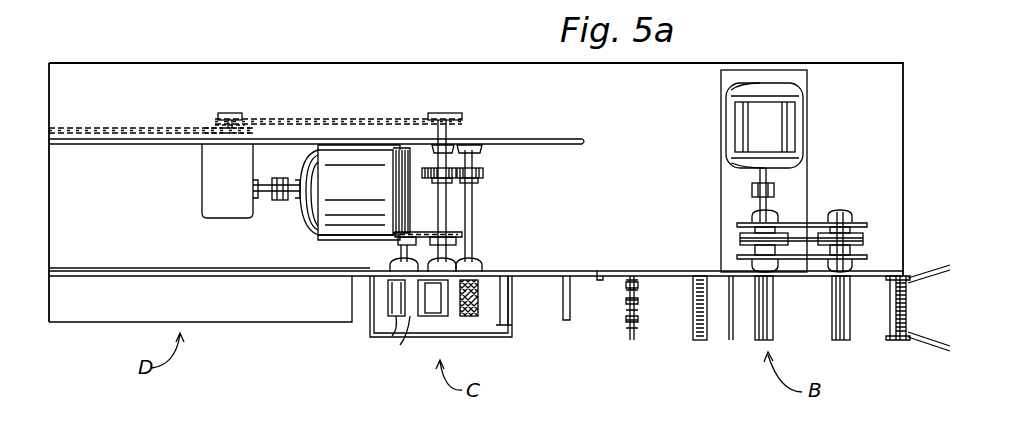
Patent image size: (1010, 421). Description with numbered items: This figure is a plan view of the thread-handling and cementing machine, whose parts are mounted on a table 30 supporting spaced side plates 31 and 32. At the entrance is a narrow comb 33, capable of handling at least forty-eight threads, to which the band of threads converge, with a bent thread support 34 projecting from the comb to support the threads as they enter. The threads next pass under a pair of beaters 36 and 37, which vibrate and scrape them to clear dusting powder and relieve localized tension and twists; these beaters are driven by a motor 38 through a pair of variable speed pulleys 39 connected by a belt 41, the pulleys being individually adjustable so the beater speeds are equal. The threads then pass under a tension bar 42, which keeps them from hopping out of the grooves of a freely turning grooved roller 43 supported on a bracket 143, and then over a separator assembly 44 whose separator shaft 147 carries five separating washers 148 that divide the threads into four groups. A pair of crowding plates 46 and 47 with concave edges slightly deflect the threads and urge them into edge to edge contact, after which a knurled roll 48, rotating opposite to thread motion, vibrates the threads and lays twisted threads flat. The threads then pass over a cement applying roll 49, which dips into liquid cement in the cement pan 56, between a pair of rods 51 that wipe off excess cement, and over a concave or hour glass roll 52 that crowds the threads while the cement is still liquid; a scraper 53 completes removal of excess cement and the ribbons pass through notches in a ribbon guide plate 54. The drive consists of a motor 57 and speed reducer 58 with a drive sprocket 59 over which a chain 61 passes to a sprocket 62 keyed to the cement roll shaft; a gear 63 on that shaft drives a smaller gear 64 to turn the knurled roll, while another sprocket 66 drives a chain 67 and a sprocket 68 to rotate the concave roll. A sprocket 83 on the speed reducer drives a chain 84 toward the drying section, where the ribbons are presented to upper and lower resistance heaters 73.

The table 30 is at (893, 133).
The side plate 31 is at (597, 272).
The side plate 32 is at (582, 140).
The narrow comb 33 is at (915, 302).
The bent thread support 34 is at (950, 350).
The beater 36 is at (850, 335).
The beater 37 is at (773, 335).
The motor 38 is at (800, 122).
The variable speed pulleys 39 is at (752, 222).
The belt 41 is at (865, 238).
The tension bar 42 is at (731, 338).
The grooved roller 43 is at (698, 338).
The separator assembly 44 is at (632, 340).
The crowding plate 46 is at (570, 302).
The crowding plate 47 is at (508, 308).
The knurled roll 48 is at (478, 292).
The cement applying roll 49 is at (440, 300).
The rods 51 is at (418, 320).
The concave roll 52 is at (403, 320).
The scraper 53 is at (388, 308).
The ribbon guide plate 54 is at (388, 289).
The cement pan 56 is at (512, 328).
The motor 57 is at (330, 215).
The speed reducer 58 is at (213, 192).
The drive sprocket 59 is at (222, 113).
The chain 61 is at (340, 118).
The sprocket 62 is at (455, 113).
The gear 63 is at (445, 180).
The gear 64 is at (480, 175).
The sprocket 66 is at (450, 240).
The chain 67 is at (430, 232).
The sprocket 68 is at (400, 240).
The resistance heaters 73 is at (118, 312).
The sprocket 83 is at (250, 125).
The chain 84 is at (135, 128).
The bracket 143 is at (634, 325).
The separator shaft 147 is at (636, 310).
The separating washers 148 is at (638, 296).